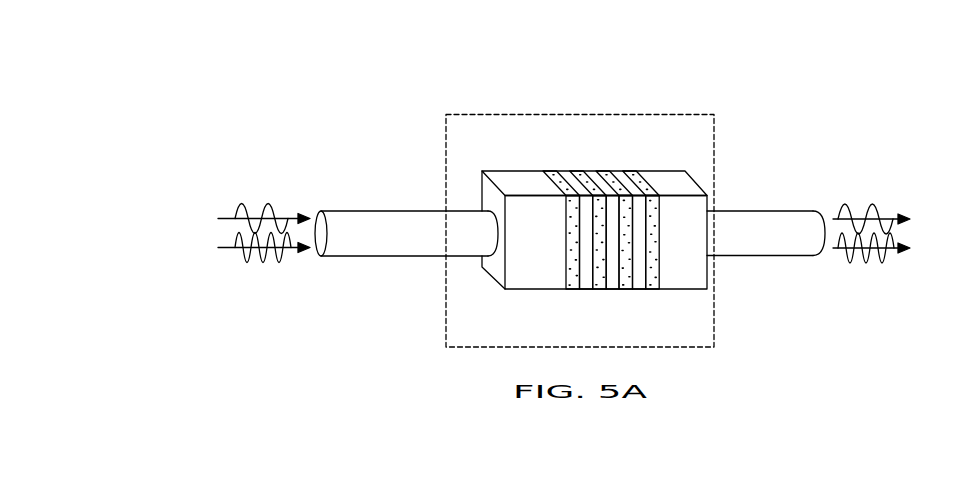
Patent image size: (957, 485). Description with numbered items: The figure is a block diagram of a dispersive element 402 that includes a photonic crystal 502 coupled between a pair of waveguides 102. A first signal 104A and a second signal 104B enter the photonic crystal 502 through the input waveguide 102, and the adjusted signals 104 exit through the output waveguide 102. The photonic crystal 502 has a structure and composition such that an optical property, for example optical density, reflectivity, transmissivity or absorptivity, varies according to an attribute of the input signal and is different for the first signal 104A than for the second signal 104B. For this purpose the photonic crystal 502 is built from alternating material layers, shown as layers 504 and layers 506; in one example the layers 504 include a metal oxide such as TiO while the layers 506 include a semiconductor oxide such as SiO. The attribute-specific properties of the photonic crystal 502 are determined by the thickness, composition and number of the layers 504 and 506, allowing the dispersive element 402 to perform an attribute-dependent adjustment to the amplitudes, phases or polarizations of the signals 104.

The dispersive element 402 is at (621, 29).
The photonic crystal 502 is at (460, 113).
The layers 504 is at (650, 152).
The layers 506 is at (657, 309).
The waveguides 102 is at (424, 242).
The signals 104 is at (905, 217).
The first signal 104A is at (230, 216).
The second signal 104B is at (230, 245).